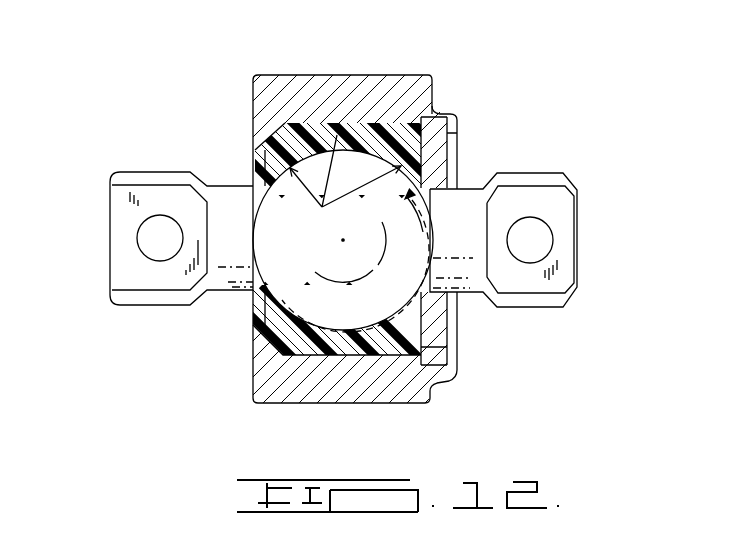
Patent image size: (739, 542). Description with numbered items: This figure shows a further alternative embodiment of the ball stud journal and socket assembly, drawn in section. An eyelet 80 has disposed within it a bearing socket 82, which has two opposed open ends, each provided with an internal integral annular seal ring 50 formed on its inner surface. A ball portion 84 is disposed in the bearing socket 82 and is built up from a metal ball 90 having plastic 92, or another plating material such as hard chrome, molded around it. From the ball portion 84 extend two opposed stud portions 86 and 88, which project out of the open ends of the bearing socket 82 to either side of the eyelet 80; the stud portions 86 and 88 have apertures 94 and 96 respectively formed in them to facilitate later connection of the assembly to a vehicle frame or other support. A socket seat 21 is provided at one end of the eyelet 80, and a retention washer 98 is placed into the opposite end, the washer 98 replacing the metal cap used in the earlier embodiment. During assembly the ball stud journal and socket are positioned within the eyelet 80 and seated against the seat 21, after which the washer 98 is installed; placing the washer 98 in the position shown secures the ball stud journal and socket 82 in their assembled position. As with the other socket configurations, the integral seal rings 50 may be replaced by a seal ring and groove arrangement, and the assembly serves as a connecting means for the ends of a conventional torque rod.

The internal integral annular seal ring 50 is at (337, 135).
The socket seat 21 is at (261, 138).
The ball portion 84 is at (407, 197).
The eyelet 80 is at (252, 370).
The bearing socket 82 is at (394, 347).
The retention washer 98 is at (433, 342).
The metal ball 90 is at (286, 298).
The plastic 92 is at (292, 291).
The stud portion 88 is at (110, 270).
The stud portion 86 is at (575, 281).
The aperture 96 is at (137, 232).
The aperture 94 is at (574, 226).